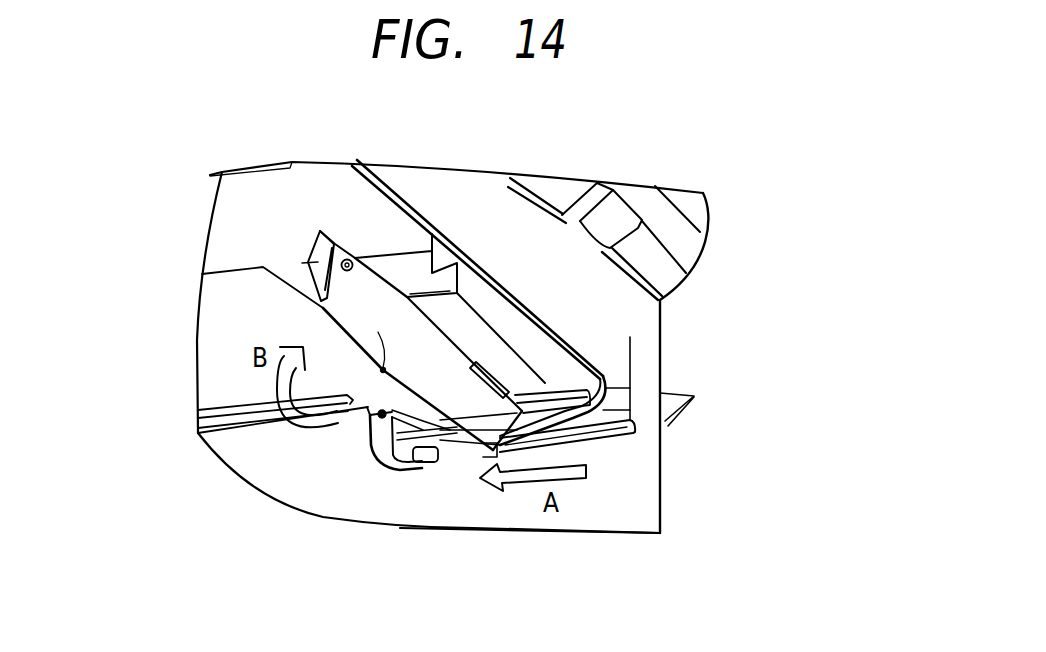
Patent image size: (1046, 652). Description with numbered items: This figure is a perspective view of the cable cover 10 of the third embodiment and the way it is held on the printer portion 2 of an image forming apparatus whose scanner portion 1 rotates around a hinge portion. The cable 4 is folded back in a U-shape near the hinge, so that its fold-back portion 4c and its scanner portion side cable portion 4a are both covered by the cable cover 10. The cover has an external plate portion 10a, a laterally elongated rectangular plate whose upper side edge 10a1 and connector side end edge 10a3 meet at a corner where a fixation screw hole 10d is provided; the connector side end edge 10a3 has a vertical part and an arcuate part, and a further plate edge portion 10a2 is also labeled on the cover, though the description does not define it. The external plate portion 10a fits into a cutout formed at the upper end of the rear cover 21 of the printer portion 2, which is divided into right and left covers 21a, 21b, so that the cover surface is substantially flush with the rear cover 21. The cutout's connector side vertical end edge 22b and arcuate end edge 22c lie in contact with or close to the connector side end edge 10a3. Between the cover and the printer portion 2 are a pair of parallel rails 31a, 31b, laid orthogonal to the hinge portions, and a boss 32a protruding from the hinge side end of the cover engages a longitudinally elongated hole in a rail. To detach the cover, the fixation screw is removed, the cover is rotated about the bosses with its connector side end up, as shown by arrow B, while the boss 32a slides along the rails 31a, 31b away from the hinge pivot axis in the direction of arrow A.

The scanner portion 1 is at (720, 237).
The printer portion 2 is at (672, 513).
The cable 4 is at (603, 412).
The scanner portion side cable portion 4a is at (630, 445).
The fold-back portion 4c is at (600, 390).
The cable cover 10 is at (452, 331).
The external plate portion 10a is at (377, 370).
The upper side edge 10a1 is at (420, 468).
The cover face portion 10a2 is at (390, 308).
The connector side end edge 10a3 is at (307, 275).
The fixation screw hole 10d is at (349, 260).
The rear cover 21 is at (510, 504).
The right cover 21a is at (367, 497).
The left cover 21b is at (600, 515).
The connector side vertical end edge 22b is at (372, 415).
The arcuate end edge 22c is at (370, 458).
The rail 31a is at (637, 425).
The rail 31b is at (552, 388).
The boss 32a is at (483, 445).